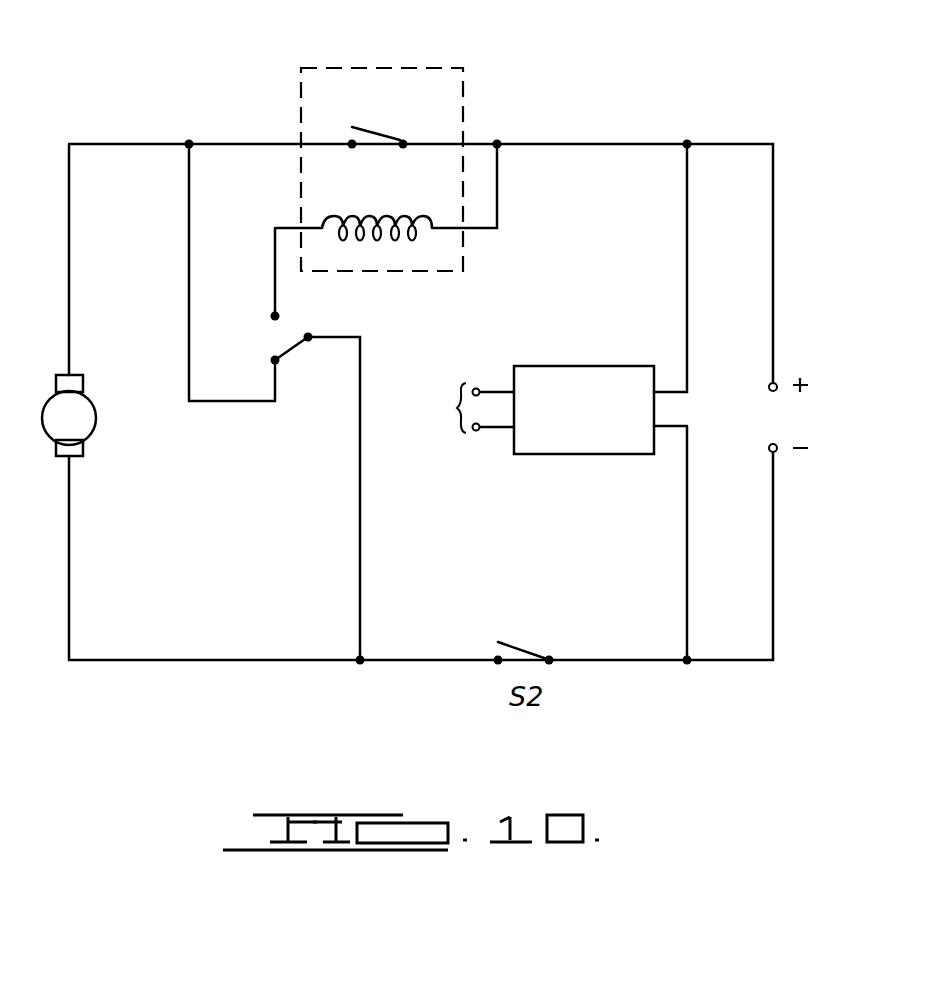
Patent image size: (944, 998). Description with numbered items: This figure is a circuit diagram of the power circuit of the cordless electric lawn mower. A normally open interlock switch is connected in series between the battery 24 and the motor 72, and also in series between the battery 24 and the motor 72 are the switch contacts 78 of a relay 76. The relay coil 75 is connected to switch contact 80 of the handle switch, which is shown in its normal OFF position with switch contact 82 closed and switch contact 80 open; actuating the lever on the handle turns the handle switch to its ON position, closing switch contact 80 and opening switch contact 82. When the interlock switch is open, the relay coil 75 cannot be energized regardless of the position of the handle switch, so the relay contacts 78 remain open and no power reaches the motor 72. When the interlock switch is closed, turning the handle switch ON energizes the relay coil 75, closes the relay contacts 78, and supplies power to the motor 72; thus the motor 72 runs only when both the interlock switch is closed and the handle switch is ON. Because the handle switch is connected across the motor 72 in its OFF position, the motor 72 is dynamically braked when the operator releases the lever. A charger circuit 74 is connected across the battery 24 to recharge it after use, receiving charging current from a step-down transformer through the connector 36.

The relay 76 is at (382, 148).
The switch contacts 78 is at (384, 134).
The relay coil 75 is at (414, 238).
The switch contact 80 is at (272, 313).
The switch contact 82 is at (270, 357).
The motor 72 is at (93, 427).
The charger circuit 74 is at (580, 372).
The connector 36 is at (454, 460).
The battery 24 is at (812, 415).